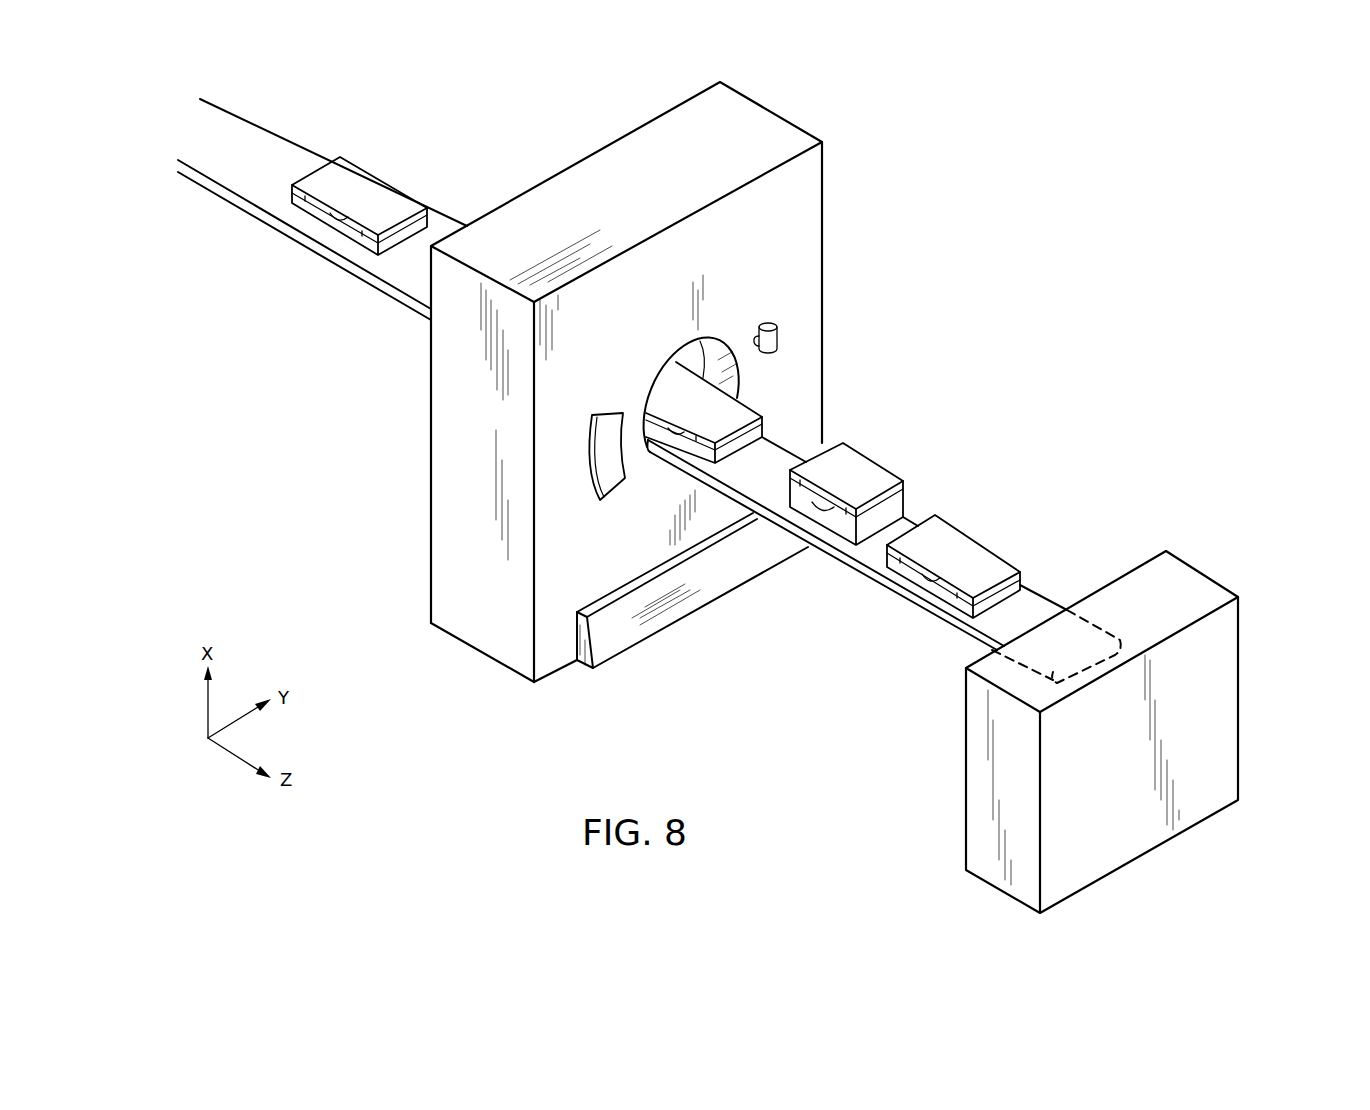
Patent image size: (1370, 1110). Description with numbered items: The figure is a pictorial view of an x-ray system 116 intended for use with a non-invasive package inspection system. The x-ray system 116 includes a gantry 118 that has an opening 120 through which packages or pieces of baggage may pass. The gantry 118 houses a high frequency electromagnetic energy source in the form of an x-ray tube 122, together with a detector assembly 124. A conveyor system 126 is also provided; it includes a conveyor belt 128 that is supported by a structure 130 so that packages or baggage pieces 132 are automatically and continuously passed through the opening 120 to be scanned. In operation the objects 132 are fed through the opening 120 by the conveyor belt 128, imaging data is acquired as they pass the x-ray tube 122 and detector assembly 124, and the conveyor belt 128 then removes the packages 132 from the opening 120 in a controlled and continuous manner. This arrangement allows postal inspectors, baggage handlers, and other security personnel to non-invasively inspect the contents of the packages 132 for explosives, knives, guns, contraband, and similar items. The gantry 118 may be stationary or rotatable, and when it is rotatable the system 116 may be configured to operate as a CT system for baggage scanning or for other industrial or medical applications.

The x-ray system 116 is at (970, 400).
The gantry 118 is at (790, 242).
The opening 120 is at (718, 343).
The x-ray tube 122 is at (778, 340).
The detector assembly 124 is at (610, 432).
The conveyor system 126 is at (200, 236).
The conveyor belt 128 is at (407, 268).
The structure 130 is at (1238, 675).
The packages 132 is at (365, 195).